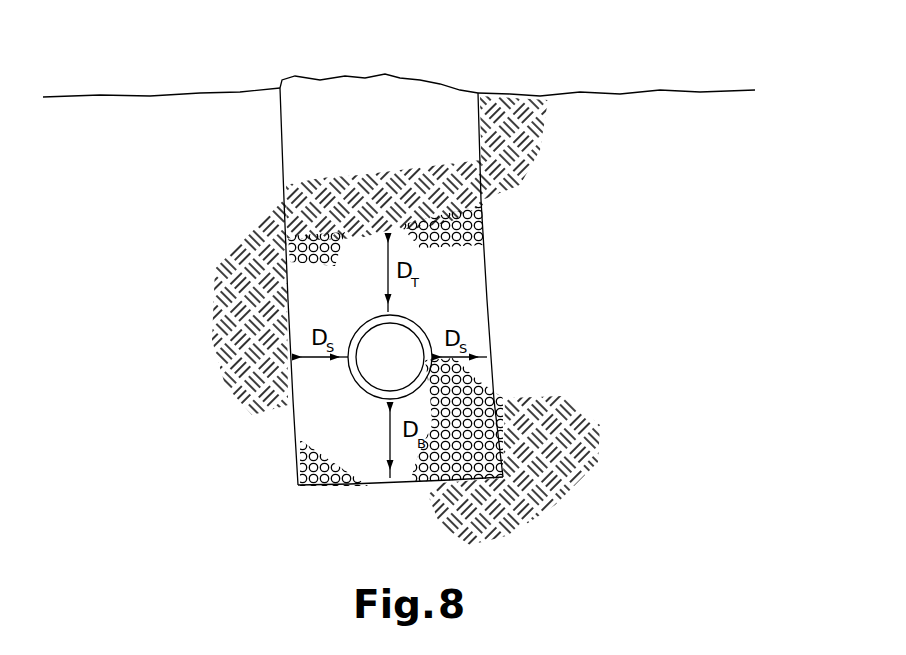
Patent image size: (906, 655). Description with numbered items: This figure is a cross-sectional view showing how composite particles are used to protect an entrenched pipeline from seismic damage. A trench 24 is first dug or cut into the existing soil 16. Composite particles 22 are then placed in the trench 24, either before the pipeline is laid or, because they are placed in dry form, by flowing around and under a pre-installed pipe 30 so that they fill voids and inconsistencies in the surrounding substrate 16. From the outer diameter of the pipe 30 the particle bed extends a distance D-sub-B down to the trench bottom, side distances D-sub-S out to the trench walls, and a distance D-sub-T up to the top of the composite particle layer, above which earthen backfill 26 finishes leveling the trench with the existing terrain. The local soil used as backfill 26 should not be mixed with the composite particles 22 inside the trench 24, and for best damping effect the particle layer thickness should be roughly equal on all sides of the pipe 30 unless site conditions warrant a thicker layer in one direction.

The existing soil 16 is at (618, 438).
The composite particles 22 is at (456, 381).
The trench 24 is at (300, 160).
The earthen backfill 26 is at (413, 109).
The pipe 30 is at (418, 322).